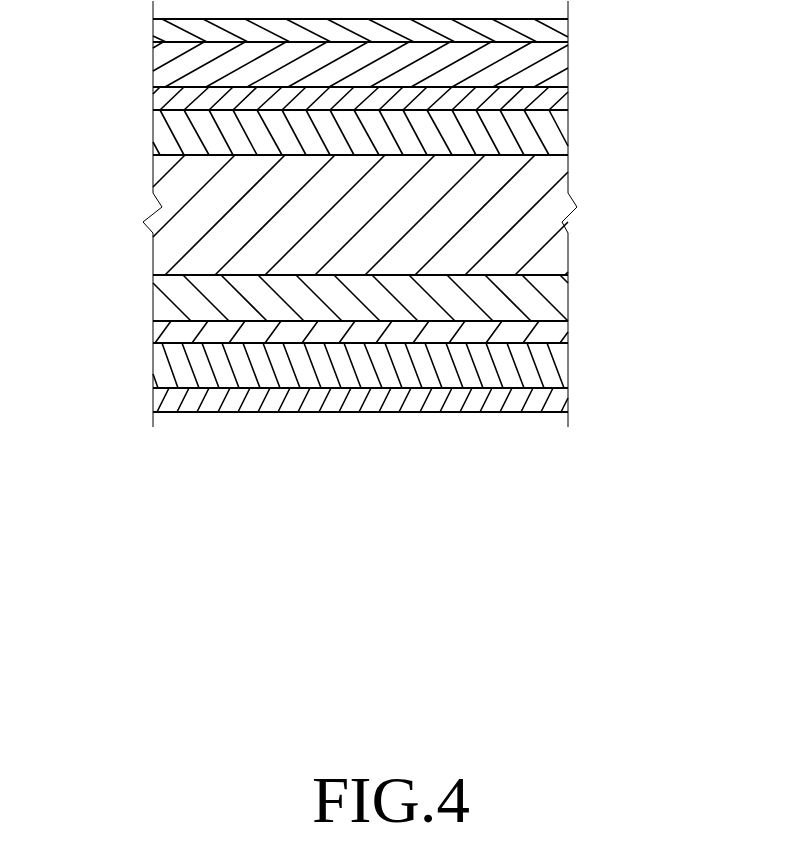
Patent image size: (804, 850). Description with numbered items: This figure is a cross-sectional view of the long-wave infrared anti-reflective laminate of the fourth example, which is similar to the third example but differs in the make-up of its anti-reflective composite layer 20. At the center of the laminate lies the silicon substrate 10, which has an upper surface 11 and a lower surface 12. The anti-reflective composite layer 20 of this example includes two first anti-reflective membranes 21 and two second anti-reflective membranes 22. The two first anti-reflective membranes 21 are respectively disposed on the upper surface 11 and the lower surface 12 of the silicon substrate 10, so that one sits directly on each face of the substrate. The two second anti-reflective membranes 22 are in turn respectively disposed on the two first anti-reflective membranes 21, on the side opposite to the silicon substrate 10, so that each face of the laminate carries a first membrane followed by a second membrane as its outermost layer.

The anti-reflective composite layer 20 is at (385, 214).
The silicon substrate 10 is at (553, 199).
The upper surface 11 is at (177, 153).
The lower surface 12 is at (175, 277).
The first anti-reflective membrane 21 is at (588, 91).
The second anti-reflective membrane 22 is at (588, 21).